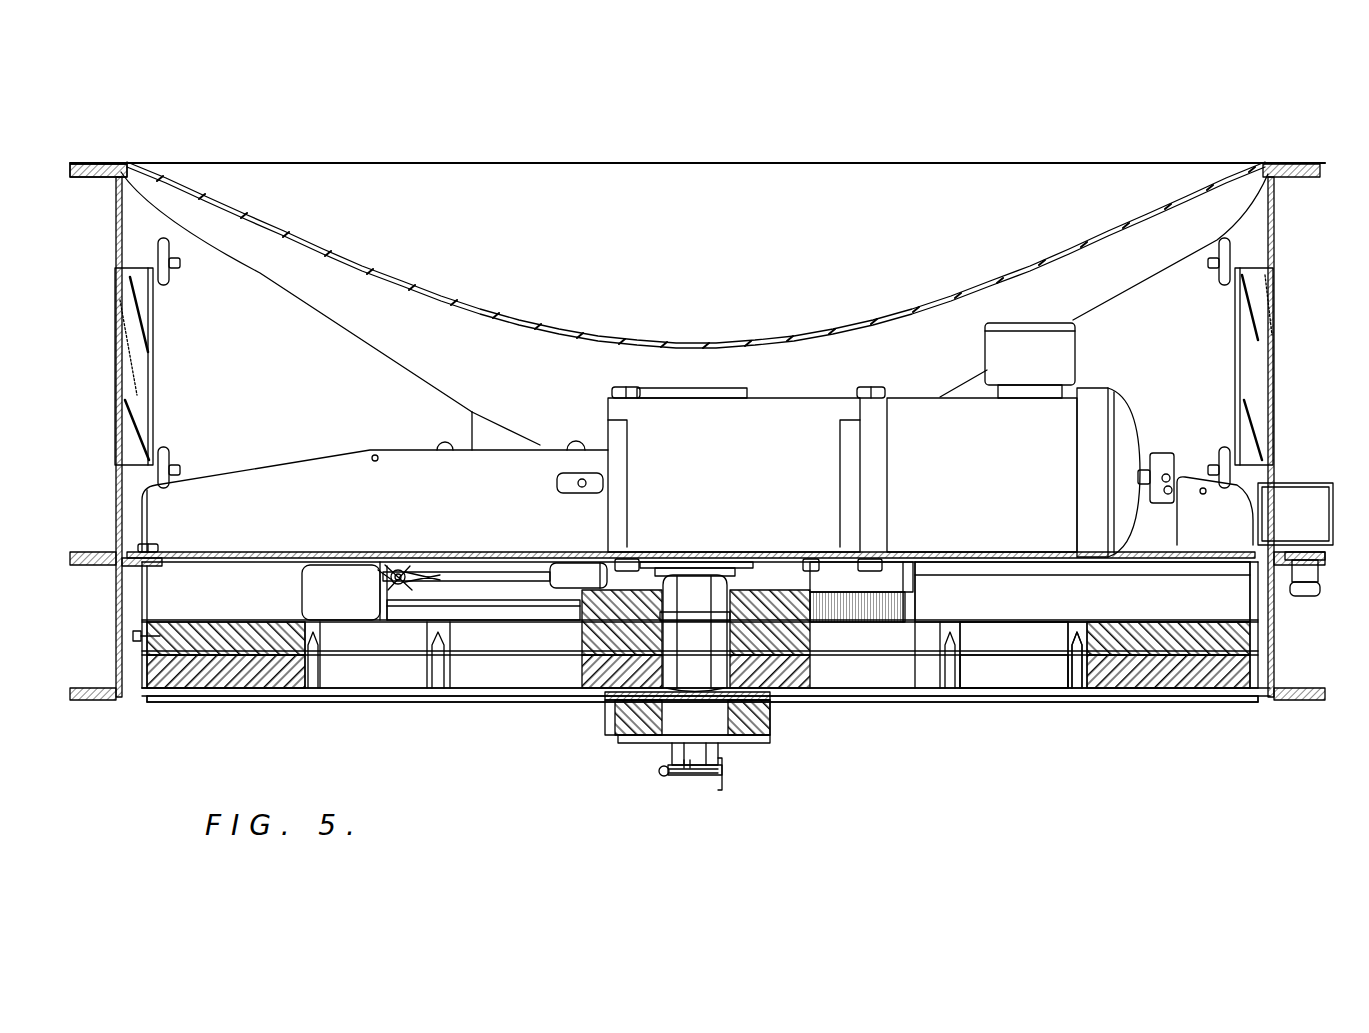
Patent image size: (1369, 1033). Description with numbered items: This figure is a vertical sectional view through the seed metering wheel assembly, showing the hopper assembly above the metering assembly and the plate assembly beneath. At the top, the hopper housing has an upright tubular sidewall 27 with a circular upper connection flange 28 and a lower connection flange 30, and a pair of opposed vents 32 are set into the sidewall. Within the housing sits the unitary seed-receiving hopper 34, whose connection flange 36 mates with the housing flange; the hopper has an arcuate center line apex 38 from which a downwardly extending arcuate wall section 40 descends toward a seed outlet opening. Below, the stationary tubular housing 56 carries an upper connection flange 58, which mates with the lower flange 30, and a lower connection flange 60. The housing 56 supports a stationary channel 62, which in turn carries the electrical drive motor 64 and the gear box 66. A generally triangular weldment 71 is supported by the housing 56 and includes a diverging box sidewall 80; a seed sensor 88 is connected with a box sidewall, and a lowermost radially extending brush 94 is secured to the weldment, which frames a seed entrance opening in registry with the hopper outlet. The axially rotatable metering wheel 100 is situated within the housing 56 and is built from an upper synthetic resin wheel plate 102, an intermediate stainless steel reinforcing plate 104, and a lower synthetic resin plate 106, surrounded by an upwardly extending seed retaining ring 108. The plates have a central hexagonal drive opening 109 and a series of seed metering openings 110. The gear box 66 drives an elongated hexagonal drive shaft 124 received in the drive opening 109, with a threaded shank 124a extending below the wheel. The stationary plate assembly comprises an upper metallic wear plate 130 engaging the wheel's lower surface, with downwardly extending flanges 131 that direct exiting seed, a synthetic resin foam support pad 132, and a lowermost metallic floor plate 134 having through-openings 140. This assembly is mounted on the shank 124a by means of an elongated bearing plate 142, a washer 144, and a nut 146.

The upright tubular sidewall 27 is at (116, 480).
The upper connection flange 28 is at (98, 178).
The lower connection flange 30 is at (92, 551).
The vent 32 is at (127, 334).
The seed-receiving hopper 34 is at (652, 178).
The connection flange 36 is at (80, 170).
The arcuate center line apex 38 is at (354, 262).
The arcuate wall section 40 is at (694, 292).
The tubular housing 56 is at (133, 635).
The upper connection flange 58 is at (90, 567).
The lower connection flange 60 is at (95, 688).
The stationary channel 62 is at (320, 467).
The electrical drive motor 64 is at (912, 405).
The gear box 66 is at (758, 443).
The weldment 71 is at (452, 551).
The box sidewall 80 is at (520, 562).
The seed sensor 88 is at (581, 566).
The brush 94 is at (885, 605).
The metering wheel 100 is at (1260, 630).
The upper synthetic resin wheel plate 102 is at (1076, 631).
The intermediate stainless steel reinforcing plate 104 is at (977, 688).
The lower synthetic resin plate 106 is at (1168, 690).
The seed retaining ring 108 is at (1247, 598).
The central hexagonal drive opening 109 is at (660, 622).
The seed metering openings 110 is at (990, 620).
The drive shaft 124 is at (690, 588).
The threaded shank 124a is at (696, 776).
The wear plate 130 is at (1023, 690).
The flange 131 is at (475, 704).
The foam support pad 132 is at (893, 697).
The floor plate 134 is at (1285, 702).
The through-opening 140 is at (1087, 698).
The bearing plate 142 is at (774, 717).
The washer 144 is at (747, 742).
The nut 146 is at (673, 757).